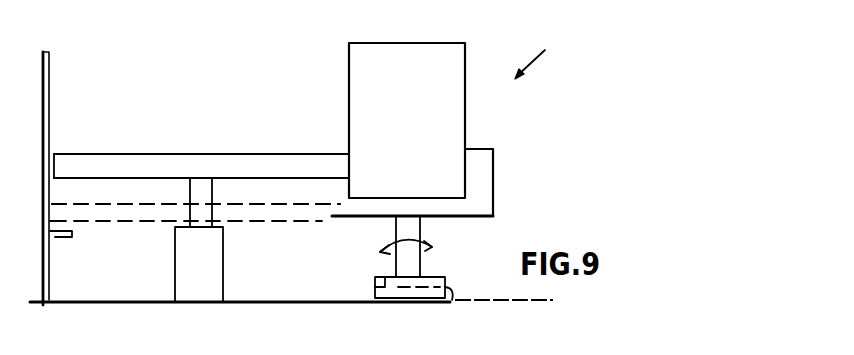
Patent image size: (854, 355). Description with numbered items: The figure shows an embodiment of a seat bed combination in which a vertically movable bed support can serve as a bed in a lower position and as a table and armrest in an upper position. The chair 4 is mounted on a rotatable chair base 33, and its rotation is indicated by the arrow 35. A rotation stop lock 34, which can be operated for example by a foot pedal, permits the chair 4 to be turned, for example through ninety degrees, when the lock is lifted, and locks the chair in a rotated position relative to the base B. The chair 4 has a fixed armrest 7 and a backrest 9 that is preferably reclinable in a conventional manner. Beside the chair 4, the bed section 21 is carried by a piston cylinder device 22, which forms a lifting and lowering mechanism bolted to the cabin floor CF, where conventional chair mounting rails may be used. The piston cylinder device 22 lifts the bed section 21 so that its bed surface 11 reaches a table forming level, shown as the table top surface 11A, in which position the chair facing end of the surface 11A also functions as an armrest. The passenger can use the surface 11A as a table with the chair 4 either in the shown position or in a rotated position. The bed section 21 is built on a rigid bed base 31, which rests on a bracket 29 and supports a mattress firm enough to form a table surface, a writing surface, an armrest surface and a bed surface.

The chair 4 is at (543, 55).
The fixed armrest 7 is at (480, 186).
The backrest 9 is at (452, 87).
The bed surface 11 is at (156, 204).
The table forming position 11A is at (211, 154).
The bed section 21 is at (109, 155).
The piston cylinder device 22 is at (212, 268).
The bracket 29 is at (60, 237).
The rigid bed base 31 is at (312, 178).
The rotatable chair base 33 is at (420, 268).
The rotation stop lock 34 is at (390, 277).
The arrow 35 is at (424, 242).
The base B is at (451, 298).
The cabin floor CF is at (510, 300).